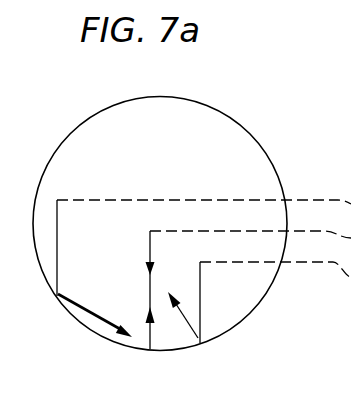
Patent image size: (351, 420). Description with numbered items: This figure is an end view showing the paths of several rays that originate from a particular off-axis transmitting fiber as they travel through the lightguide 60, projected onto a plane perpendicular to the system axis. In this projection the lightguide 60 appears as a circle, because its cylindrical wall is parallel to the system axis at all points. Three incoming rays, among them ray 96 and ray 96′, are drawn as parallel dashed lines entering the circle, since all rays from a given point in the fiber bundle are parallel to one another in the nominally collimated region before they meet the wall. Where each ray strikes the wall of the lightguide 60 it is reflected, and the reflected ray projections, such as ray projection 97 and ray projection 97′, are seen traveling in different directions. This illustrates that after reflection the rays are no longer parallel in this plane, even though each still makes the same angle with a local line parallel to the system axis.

The lightguide 60 is at (88, 118).
The ray 96 is at (57, 251).
The ray 96′ is at (150, 252).
The ray projection 97 is at (92, 317).
The ray projection 97′ is at (150, 335).